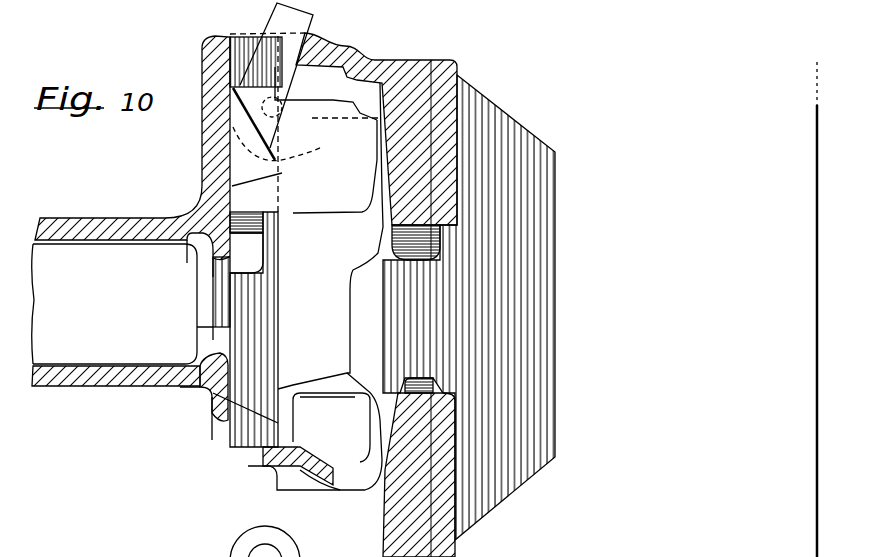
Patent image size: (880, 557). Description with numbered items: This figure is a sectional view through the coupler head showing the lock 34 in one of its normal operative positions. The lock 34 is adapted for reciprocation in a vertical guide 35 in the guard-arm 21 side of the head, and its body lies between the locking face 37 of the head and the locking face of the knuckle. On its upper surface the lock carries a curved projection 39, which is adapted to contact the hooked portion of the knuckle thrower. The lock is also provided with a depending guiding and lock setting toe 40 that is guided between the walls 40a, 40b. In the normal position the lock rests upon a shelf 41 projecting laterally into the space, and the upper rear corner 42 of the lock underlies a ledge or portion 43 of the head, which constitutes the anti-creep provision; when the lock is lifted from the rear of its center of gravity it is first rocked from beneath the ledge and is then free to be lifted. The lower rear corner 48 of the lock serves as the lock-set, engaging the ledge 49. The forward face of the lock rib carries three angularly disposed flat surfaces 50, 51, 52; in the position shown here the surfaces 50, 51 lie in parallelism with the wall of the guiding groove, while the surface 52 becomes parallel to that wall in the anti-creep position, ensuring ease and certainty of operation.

The guard-arm 21 is at (515, 286).
The upper rear corner 42 is at (230, 88).
The flat surface 50 is at (271, 75).
The curved projection 39 is at (326, 93).
The flat surface 51 is at (315, 150).
The lock 34 is at (335, 166).
The locking face of the head 37 is at (330, 286).
The flat surface 52 is at (262, 230).
The vertical guide 35 is at (262, 310).
The guiding and lock setting toe 40 is at (262, 234).
The ledge of the head 43 is at (213, 272).
The lower rear corner 48 is at (232, 273).
The lock-set ledge 49 is at (210, 342).
The shelf 41 is at (325, 369).
The wall 40b is at (227, 430).
The wall 40a is at (278, 421).